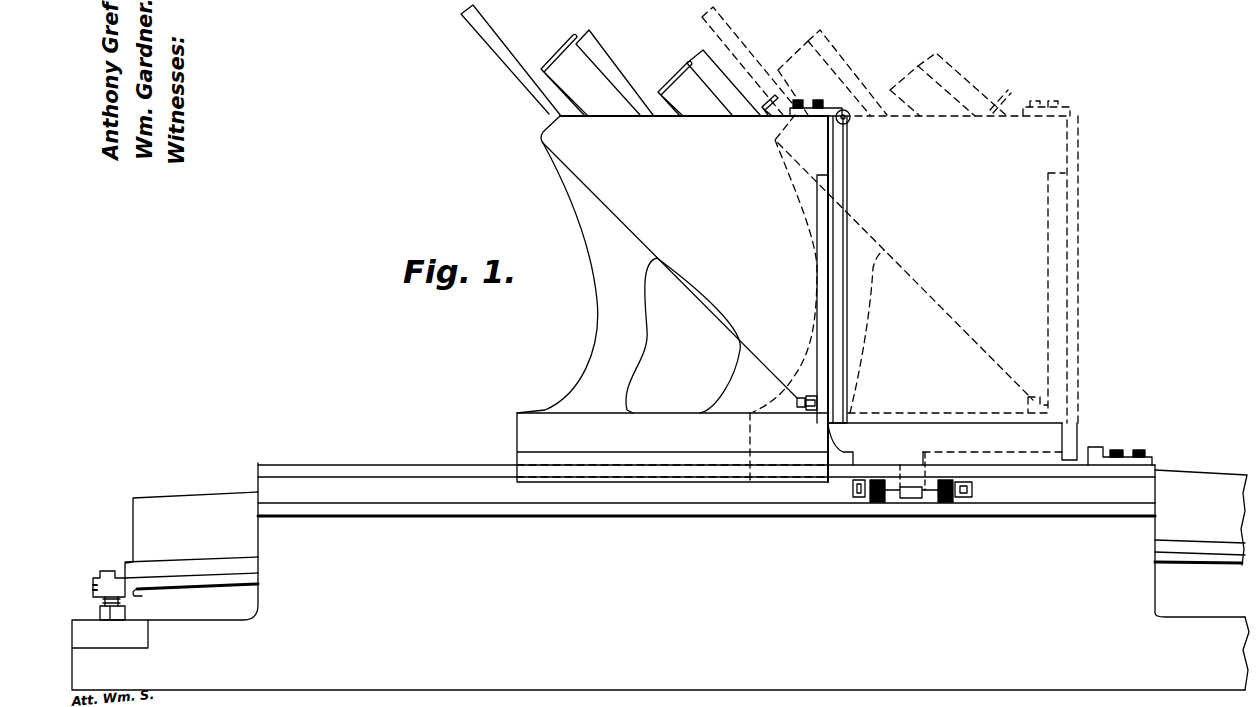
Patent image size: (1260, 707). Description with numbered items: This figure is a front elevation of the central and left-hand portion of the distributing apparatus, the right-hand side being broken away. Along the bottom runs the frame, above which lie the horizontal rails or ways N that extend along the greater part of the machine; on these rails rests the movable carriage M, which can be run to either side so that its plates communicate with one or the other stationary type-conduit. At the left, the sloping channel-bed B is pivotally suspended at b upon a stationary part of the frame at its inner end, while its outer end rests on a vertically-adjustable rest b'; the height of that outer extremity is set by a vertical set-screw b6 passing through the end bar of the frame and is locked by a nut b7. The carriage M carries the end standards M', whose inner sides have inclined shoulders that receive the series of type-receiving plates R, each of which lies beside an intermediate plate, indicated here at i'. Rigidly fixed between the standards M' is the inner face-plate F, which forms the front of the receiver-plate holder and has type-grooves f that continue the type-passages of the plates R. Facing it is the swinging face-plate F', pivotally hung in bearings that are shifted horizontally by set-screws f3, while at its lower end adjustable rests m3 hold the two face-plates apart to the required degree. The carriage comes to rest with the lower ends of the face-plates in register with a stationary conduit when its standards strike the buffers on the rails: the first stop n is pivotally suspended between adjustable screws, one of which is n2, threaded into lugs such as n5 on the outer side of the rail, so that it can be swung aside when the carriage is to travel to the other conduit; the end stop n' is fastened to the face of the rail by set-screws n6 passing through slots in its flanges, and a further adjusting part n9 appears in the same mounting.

The horizontal rails or ways N is at (660, 576).
The base rail B is at (686, 533).
The pivots of the channel-beds b is at (109, 576).
The vertically-adjustable rests b' is at (125, 599).
The vertical set-screws b6 is at (100, 600).
The nuts b7 is at (94, 615).
The movable carriage M is at (672, 447).
The end standards M' is at (672, 299).
The type-receiving plates R is at (610, 60).
The bar brackets i' is at (659, 75).
The swinging face-plate F' is at (842, 266).
The inner fixed face-plate F is at (822, 299).
The type-grooves f is at (847, 112).
The set-screws f3 is at (805, 104).
The adjustable rests m3 is at (792, 410).
The first stops or buffers n is at (945, 444).
The end stops or buffers n' is at (1107, 444).
The set-screws n6 is at (1142, 452).
The lug n5 is at (957, 497).
The adjustable screw n2 is at (892, 498).
The adjusting nut n9 is at (933, 498).